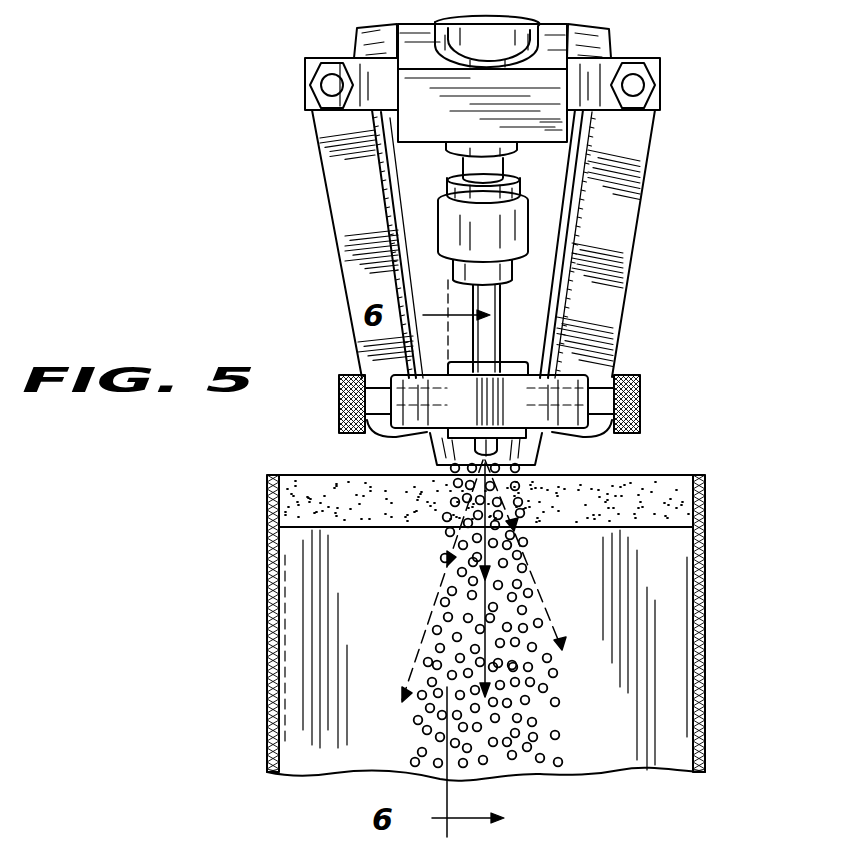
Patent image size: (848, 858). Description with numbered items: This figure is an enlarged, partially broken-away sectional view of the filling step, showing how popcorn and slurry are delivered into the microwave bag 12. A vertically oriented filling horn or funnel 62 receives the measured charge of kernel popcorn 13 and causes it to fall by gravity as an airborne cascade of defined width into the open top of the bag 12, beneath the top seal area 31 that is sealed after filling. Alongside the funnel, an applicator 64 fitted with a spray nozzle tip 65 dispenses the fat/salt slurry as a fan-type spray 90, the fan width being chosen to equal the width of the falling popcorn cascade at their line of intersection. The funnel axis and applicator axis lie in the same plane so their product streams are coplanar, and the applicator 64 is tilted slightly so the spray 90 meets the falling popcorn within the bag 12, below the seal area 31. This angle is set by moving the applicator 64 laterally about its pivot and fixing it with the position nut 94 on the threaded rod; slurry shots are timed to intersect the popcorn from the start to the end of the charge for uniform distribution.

The microwave bag 12 is at (258, 584).
The kernel popcorn / fat-salt slurry 13 is at (536, 721).
The top seal area 31 is at (660, 495).
The filling horn or funnel 62 is at (405, 182).
The applicator 64 is at (497, 287).
The spray nozzle tip 65 is at (496, 447).
The fan-type spray 90 is at (546, 613).
The position nut 94 is at (660, 83).